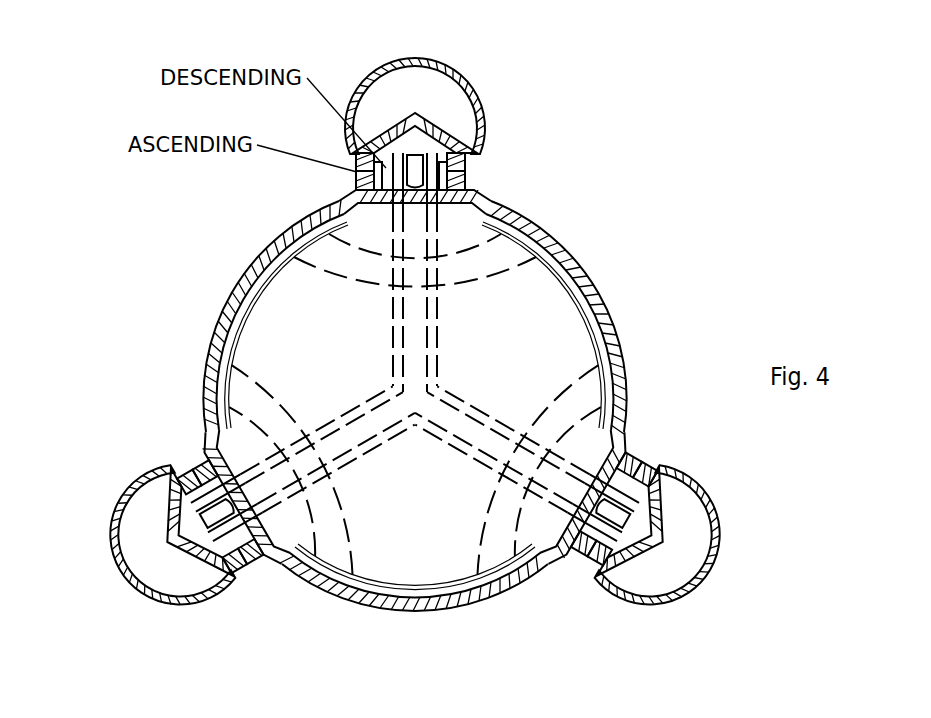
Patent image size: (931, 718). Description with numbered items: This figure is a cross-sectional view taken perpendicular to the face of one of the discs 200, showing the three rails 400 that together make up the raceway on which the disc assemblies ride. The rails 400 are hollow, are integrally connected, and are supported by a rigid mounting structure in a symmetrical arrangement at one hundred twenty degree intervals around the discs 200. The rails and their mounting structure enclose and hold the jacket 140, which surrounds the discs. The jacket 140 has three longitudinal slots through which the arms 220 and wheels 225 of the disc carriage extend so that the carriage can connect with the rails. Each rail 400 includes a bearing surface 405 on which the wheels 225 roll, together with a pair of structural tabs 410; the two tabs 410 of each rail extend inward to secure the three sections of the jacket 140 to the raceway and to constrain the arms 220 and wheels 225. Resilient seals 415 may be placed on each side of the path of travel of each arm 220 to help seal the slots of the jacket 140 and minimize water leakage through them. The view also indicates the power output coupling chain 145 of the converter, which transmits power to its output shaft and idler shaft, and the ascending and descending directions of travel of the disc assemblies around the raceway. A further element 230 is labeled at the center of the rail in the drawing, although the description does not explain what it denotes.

The jacket 140 is at (415, 612).
The power output coupling chain 145 is at (357, 172).
The disc 200 is at (562, 277).
The arm 220 is at (358, 405).
The wheel 225 is at (617, 560).
The central conduit 230 is at (390, 172).
The rail 400 is at (707, 495).
The bearing surface 405 is at (641, 478).
The structural tab 410 is at (623, 460).
The resilient seal 415 is at (545, 500).